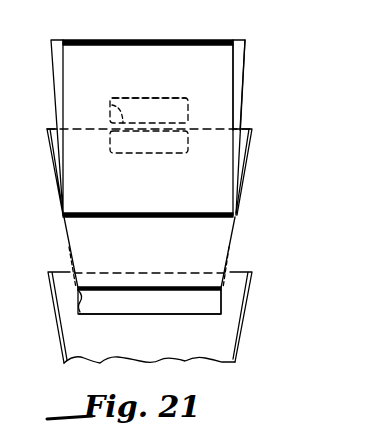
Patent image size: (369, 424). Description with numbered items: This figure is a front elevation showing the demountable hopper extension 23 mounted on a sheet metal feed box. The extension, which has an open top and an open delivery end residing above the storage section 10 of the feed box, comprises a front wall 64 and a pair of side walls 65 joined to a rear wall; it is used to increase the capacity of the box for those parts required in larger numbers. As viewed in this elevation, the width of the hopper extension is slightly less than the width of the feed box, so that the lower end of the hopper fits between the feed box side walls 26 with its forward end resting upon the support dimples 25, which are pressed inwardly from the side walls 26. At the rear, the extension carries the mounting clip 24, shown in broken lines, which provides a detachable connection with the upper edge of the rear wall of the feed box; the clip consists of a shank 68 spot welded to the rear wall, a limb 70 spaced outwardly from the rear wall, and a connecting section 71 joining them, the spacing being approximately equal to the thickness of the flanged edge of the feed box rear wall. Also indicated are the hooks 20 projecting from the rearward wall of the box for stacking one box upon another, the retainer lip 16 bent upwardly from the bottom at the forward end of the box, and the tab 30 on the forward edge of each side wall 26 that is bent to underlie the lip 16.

The storage section 10 is at (252, 167).
The demountable hopper extension 23 is at (217, 63).
The side walls of extension hopper 65 is at (243, 70).
The front wall 64 is at (215, 97).
The side walls 26 is at (240, 200).
The support dimples 25 is at (67, 218).
The hooks 20 is at (76, 270).
The retainer lip 16 is at (145, 302).
The tab 30 is at (218, 292).
The clip 24 is at (136, 99).
The shank 68 is at (180, 96).
The connecting section 71 is at (110, 107).
The limb 70 is at (110, 140).